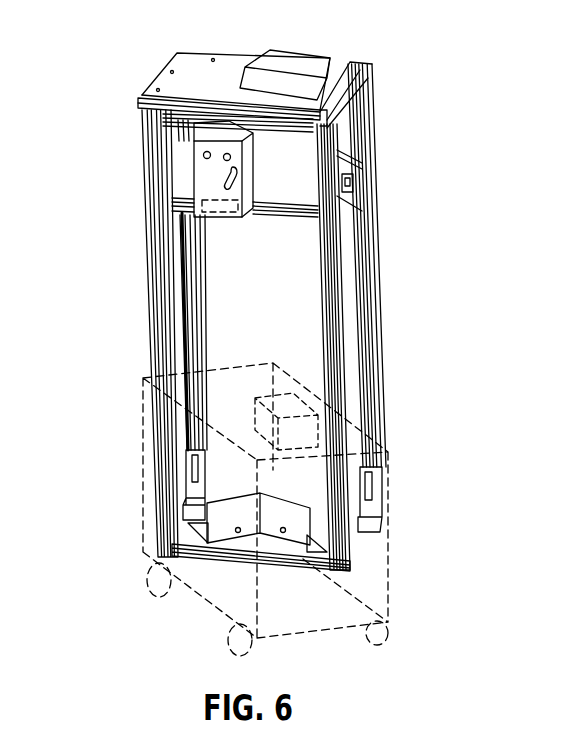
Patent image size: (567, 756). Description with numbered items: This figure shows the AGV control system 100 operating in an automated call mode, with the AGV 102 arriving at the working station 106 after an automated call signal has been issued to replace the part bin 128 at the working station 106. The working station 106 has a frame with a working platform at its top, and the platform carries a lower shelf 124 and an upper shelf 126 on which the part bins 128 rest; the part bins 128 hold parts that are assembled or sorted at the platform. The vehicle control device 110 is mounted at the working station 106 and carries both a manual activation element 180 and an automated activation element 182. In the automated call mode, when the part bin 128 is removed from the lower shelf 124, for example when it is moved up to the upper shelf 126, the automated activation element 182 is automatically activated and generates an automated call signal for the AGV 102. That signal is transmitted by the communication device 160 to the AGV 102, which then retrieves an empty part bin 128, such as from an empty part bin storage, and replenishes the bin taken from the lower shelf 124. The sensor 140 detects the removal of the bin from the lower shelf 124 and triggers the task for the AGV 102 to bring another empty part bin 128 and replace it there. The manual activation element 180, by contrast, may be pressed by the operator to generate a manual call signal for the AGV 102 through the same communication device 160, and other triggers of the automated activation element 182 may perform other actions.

The AGV control system 100 is at (408, 47).
The working station 106 is at (376, 232).
The upper shelf 126 is at (226, 80).
The lower shelf 124 is at (350, 163).
The sensor 140 is at (355, 182).
The vehicle control device 110 is at (203, 183).
The manual activation element 180 is at (203, 155).
The communication device 160 is at (226, 189).
The automated activation element 182 is at (182, 252).
The part bin 128 is at (338, 398).
The AGV 102 is at (140, 492).